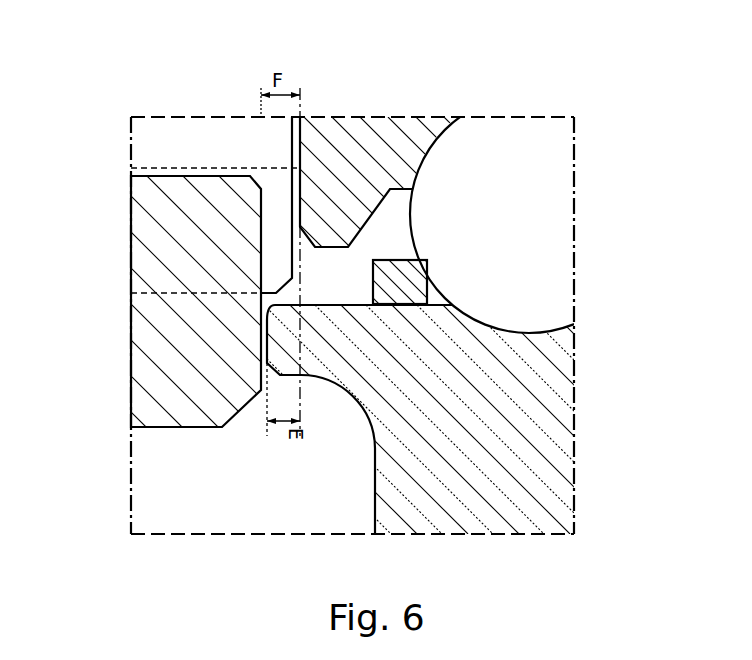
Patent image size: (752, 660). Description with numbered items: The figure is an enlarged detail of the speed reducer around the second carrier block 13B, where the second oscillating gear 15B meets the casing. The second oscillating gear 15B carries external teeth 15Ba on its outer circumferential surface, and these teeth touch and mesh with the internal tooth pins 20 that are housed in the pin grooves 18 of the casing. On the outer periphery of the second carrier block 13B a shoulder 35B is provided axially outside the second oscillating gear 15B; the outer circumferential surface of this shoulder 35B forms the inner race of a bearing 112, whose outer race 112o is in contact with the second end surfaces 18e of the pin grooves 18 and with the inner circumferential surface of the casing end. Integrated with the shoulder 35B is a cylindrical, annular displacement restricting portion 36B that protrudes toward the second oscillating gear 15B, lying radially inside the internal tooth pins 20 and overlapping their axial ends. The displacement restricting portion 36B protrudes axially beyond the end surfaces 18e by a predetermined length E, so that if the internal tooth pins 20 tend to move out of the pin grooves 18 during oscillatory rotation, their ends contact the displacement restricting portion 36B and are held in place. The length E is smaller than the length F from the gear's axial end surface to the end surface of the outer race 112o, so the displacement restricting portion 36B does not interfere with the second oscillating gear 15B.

The internal tooth pin 20 is at (197, 112).
The second oscillating gear 15B is at (160, 163).
The external teeth 15Ba is at (205, 170).
The pin groove 18 is at (172, 283).
The second end surface of pin groove 18e is at (305, 150).
The bearing 112 is at (585, 155).
The outer race 112o is at (410, 130).
The shoulder 35B is at (398, 372).
The displacement restricting portion 36B is at (277, 353).
The second carrier block 13B is at (580, 472).